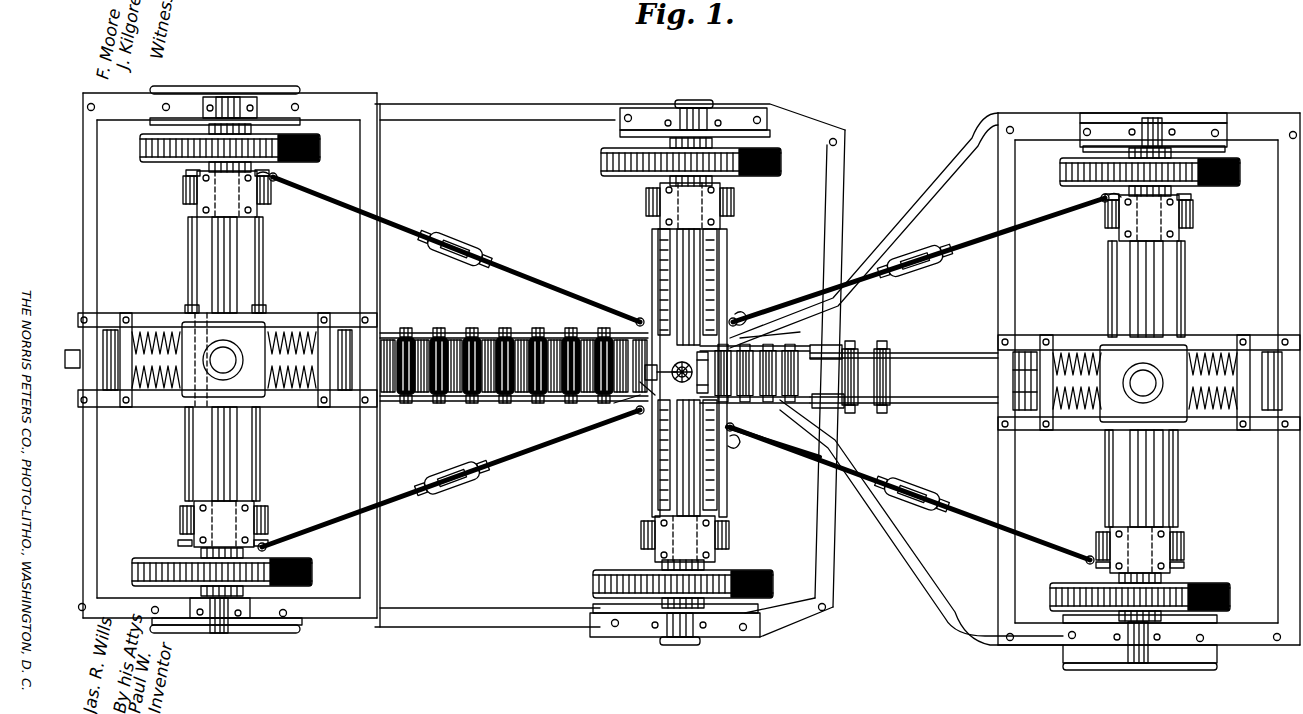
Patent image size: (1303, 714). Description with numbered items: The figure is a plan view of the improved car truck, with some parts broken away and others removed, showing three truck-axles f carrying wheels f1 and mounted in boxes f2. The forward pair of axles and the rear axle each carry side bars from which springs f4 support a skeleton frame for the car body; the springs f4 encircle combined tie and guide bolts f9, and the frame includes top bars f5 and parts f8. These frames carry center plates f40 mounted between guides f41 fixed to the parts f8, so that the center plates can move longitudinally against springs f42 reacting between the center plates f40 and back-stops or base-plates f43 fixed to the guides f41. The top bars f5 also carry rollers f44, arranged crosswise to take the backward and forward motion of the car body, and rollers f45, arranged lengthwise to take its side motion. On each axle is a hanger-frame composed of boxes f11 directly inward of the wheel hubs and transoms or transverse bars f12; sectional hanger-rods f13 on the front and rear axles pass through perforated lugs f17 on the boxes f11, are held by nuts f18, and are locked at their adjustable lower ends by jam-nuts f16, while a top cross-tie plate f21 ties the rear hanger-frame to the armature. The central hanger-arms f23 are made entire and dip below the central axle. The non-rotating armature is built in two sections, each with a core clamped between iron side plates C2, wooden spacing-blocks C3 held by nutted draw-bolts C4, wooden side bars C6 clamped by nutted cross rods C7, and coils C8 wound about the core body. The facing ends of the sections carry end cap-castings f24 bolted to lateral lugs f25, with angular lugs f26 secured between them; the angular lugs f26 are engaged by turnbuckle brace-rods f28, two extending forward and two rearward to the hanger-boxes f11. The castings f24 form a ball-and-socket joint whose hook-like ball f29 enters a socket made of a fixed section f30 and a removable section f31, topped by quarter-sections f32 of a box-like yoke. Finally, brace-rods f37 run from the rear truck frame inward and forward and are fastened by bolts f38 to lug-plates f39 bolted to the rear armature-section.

The truck-axle f is at (220, 262).
The wheel f1 is at (319, 150).
The box f2 is at (224, 98).
The spring f4 is at (298, 95).
The top bar of skeleton frame f5 is at (475, 108).
The skeleton frame part f8 is at (97, 233).
The combined tie and guide bolt f9 is at (163, 110).
The hanger-frame box f11 is at (686, 372).
The transom f12 is at (186, 462).
The hanger-rod f13 is at (188, 288).
The jam-nut f16 is at (186, 309).
The perforated lug f17 is at (187, 196).
The nut f18 is at (190, 178).
The top cross-tie plate f21 is at (709, 372).
The central hanger-arm f23 is at (653, 260).
The end cap-casting f24 is at (682, 381).
The lateral lug f25 is at (752, 445).
The angular lug f26 is at (742, 316).
The turnbuckle brace-rod f28 is at (540, 284).
The ball portion f29 is at (628, 400).
The fixed socket section f30 is at (648, 365).
The removable socket section f31 is at (643, 385).
The quarter-section of box-like yoke f32 is at (770, 328).
The brace-rod f37 is at (958, 172).
The bolt f38 is at (755, 373).
The lug-plate f39 is at (827, 367).
The center plate f40 is at (684, 367).
The guide f41 is at (104, 318).
The spring f42 is at (684, 370).
The back-stop or base-plate f43 is at (115, 392).
The roller f44 is at (238, 94).
The roller f45 is at (706, 107).
The side plate C2 is at (490, 326).
The spacing-block C3 is at (536, 408).
The draw-bolt C4 is at (470, 330).
The side bar C6 is at (436, 328).
The cross rod C7 is at (566, 328).
The coil C8 is at (604, 328).